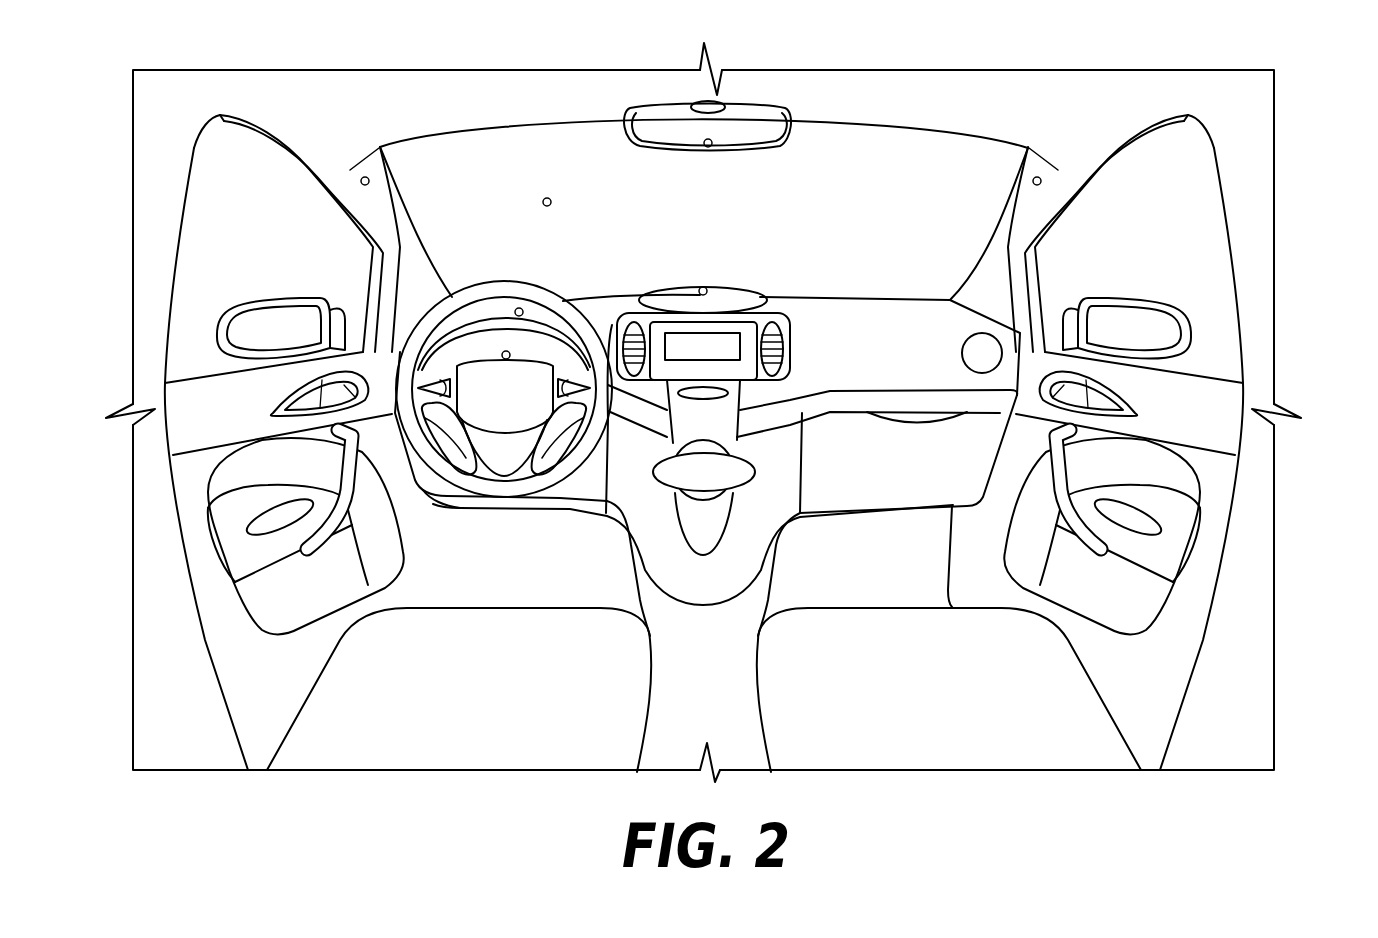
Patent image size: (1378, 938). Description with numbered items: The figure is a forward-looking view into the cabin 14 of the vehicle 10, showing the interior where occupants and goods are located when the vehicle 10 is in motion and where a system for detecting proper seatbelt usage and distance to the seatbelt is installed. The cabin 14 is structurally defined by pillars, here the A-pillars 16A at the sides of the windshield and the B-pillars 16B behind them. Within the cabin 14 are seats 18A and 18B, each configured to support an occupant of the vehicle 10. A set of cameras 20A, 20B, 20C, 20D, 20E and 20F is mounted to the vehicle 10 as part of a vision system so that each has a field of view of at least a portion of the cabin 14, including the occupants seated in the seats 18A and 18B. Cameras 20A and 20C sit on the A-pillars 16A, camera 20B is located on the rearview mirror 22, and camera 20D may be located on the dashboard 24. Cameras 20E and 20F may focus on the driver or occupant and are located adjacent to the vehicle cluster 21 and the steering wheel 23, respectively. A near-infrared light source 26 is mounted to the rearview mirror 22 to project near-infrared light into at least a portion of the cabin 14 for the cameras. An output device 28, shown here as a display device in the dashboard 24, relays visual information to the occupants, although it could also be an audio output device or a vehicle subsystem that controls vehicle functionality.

The vehicle 10 is at (1210, 726).
The cabin 14 is at (879, 213).
The A-pillars 16A is at (380, 207).
The B-pillars 16B is at (149, 440).
The seat 18A is at (434, 707).
The seat 18B is at (991, 707).
The camera 20A is at (365, 177).
The camera 20B is at (709, 147).
The camera 20C is at (1040, 177).
The camera 20D is at (703, 287).
The camera 20E is at (519, 308).
The camera 20F is at (506, 351).
The vehicle cluster 21 is at (475, 335).
The rearview mirror 22 is at (628, 113).
The steering wheel 23 is at (432, 457).
The dashboard 24 is at (603, 303).
The near-infrared light source 26 is at (706, 104).
The output device 28 is at (727, 340).